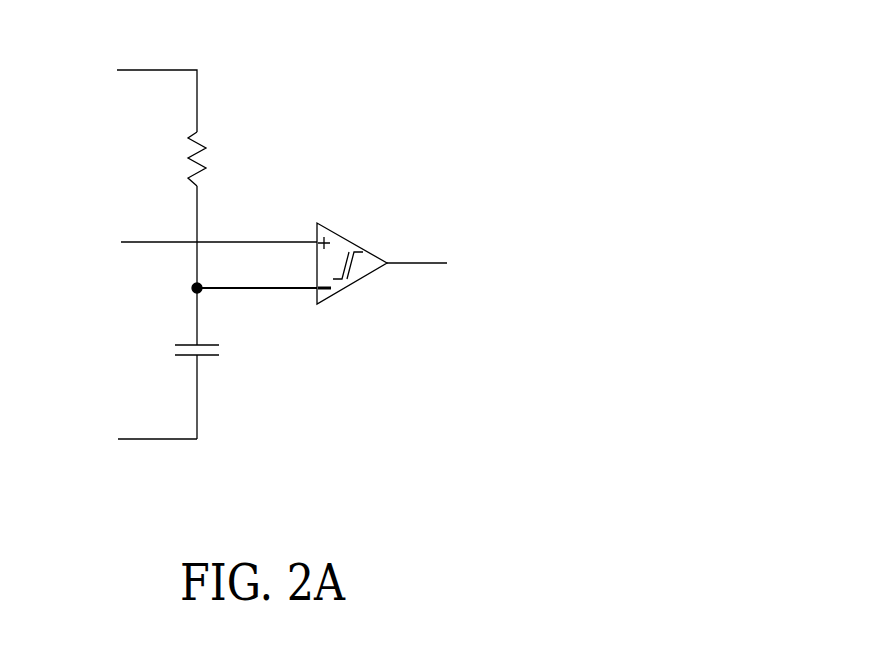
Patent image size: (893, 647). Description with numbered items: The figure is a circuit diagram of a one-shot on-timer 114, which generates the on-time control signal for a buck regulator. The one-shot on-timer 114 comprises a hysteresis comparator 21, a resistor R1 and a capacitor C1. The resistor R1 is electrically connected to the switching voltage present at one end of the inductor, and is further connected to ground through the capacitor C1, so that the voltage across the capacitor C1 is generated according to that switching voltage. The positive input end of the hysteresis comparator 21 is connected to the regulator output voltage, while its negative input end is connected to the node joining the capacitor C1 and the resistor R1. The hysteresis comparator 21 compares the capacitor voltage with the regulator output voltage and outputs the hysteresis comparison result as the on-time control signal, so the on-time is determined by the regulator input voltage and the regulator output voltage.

The one-shot on-timer 114 is at (440, 41).
The hysteresis comparator 21 is at (343, 235).
The resistor R1 is at (213, 159).
The capacitor C1 is at (215, 354).